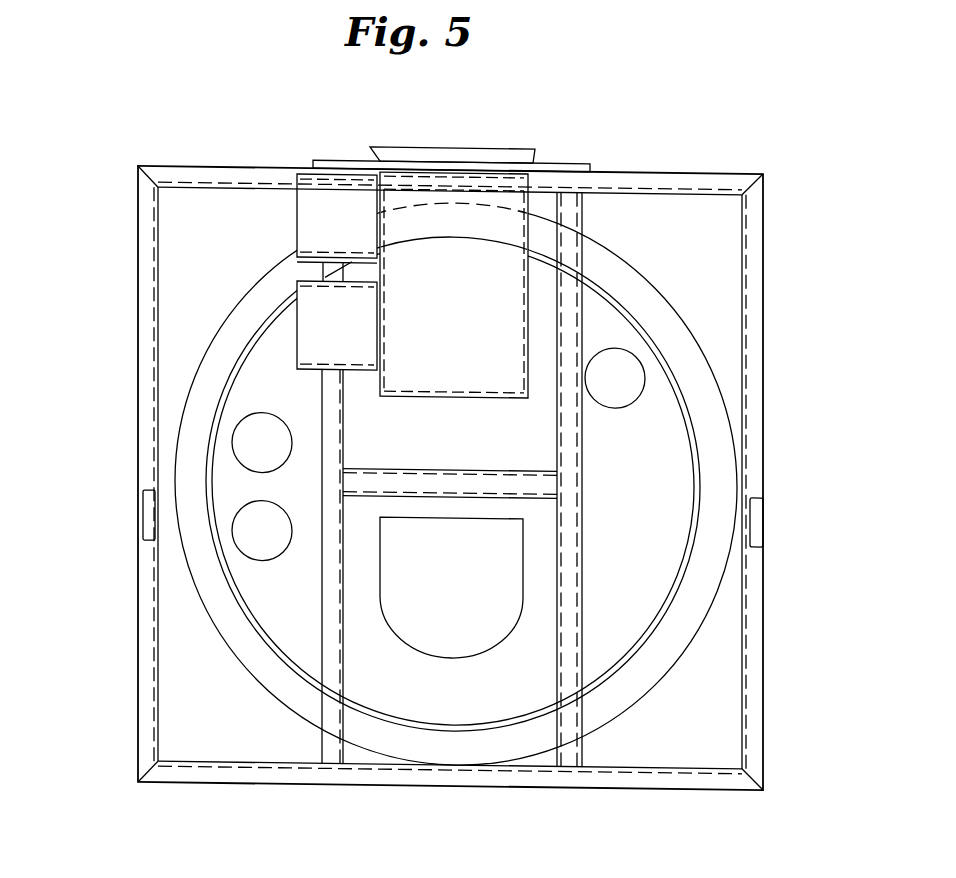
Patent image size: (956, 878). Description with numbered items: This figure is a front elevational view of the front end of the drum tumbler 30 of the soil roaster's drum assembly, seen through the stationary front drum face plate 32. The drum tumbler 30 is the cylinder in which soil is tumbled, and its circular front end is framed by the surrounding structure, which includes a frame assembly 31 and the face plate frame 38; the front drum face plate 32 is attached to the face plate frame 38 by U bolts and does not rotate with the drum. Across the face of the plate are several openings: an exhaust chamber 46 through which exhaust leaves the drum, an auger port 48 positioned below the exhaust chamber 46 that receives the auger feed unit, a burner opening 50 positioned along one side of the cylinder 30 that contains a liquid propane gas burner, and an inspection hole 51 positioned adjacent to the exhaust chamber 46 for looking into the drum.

The drum tumbler 30 is at (698, 529).
The frame assembly 31 is at (148, 644).
The front drum face plate 32 is at (258, 377).
The face plate frame 38 is at (333, 746).
The exhaust chamber 46 is at (487, 305).
The auger port 48 is at (430, 635).
The burner opening 50 is at (240, 450).
The inspection hole 51 is at (630, 383).